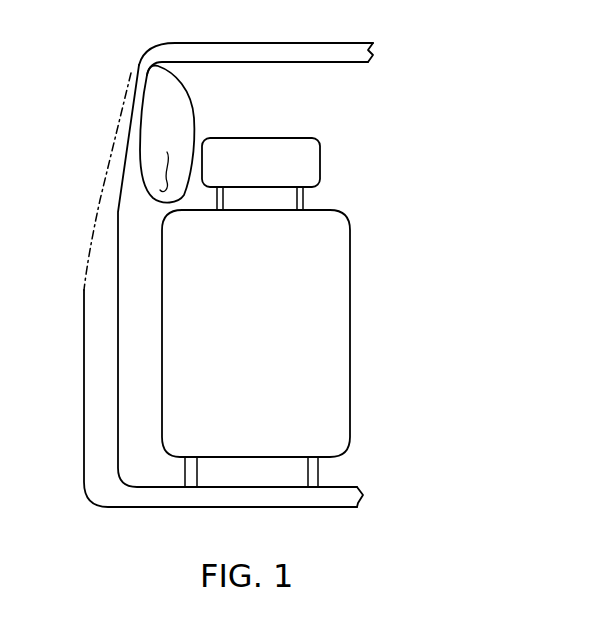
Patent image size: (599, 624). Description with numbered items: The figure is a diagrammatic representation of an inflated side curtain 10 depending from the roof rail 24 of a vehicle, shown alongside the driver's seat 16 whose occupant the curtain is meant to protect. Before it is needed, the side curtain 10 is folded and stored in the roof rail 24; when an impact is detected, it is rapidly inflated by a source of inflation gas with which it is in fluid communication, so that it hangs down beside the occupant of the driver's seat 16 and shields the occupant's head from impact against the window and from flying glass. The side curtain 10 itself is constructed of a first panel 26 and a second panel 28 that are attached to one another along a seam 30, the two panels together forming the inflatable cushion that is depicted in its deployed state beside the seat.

The side curtain 10 is at (212, 133).
The driver's seat 16 is at (350, 253).
The roof rail 24 is at (131, 74).
The first panel 26 is at (193, 130).
The second panel 28 is at (133, 143).
The seam 30 is at (170, 161).